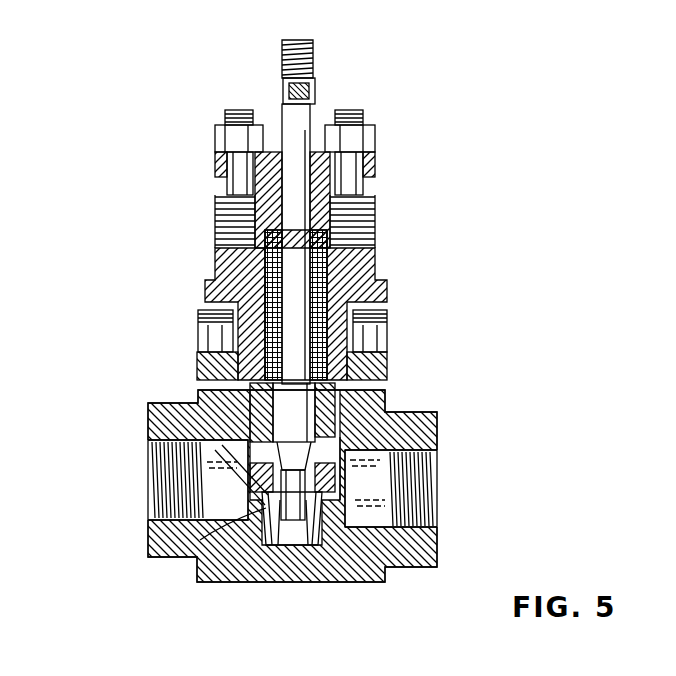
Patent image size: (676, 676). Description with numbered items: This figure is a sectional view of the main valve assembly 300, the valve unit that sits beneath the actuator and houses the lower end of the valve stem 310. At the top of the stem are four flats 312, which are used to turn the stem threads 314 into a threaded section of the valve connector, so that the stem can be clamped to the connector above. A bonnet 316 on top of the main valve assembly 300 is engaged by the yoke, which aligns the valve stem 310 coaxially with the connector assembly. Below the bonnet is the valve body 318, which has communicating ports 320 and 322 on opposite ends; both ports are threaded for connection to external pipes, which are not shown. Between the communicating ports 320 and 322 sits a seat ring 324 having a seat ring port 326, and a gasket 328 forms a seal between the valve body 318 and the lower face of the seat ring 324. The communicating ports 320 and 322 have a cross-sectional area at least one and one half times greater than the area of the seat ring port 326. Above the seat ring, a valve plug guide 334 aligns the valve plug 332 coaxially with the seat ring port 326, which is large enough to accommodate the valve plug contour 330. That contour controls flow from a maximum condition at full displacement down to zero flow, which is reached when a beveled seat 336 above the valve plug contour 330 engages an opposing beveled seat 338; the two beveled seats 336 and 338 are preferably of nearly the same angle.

The main valve assembly 300 is at (493, 205).
The valve stem 310 is at (311, 120).
The flats 312 is at (315, 86).
The stem threads 314 is at (281, 62).
The bonnet 316 is at (215, 265).
The valve body 318 is at (150, 532).
The communicating port 320 is at (228, 506).
The communicating port 322 is at (352, 458).
The seat ring 324 is at (338, 482).
The seat ring port 326 is at (300, 550).
The gasket 328 is at (268, 505).
The valve plug contour 330 is at (340, 437).
The valve plug 332 is at (252, 393).
The valve plug guide 334 is at (283, 405).
The beveled seat 336 is at (250, 442).
The opposing beveled seat 338 is at (277, 550).